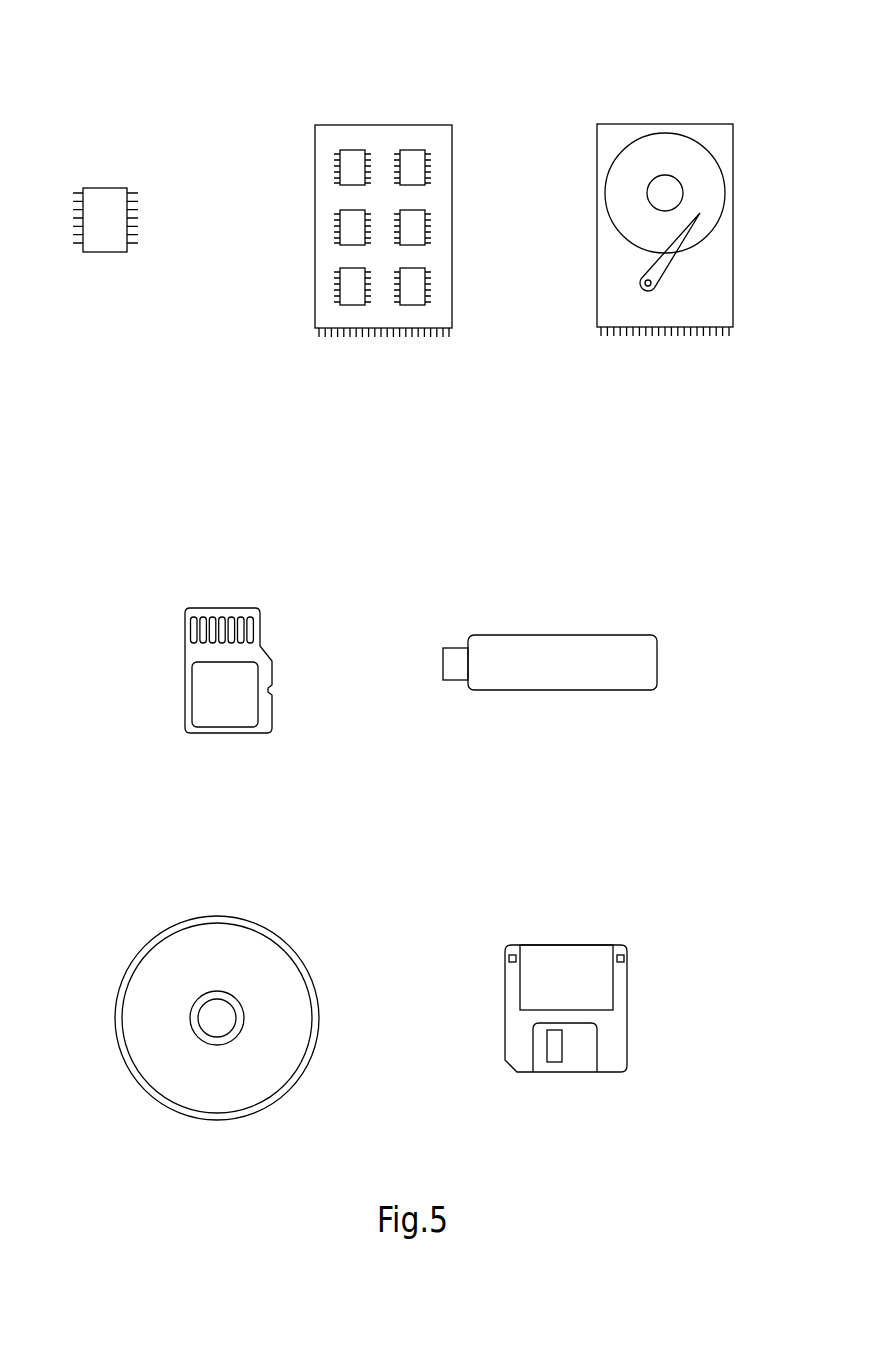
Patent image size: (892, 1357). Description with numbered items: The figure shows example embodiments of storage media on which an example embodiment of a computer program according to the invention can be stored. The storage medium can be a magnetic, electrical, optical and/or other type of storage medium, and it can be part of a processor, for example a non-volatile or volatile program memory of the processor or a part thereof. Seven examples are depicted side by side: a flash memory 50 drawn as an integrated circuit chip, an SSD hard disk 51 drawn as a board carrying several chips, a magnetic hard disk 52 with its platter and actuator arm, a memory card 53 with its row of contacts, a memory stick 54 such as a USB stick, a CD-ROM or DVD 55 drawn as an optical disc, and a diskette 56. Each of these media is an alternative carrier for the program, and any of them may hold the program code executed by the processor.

The flash memory 50 is at (131, 148).
The SSD hard disk 51 is at (454, 87).
The magnetic hard disk 52 is at (736, 87).
The memory card 53 is at (264, 577).
The memory stick 54 is at (631, 596).
The CD-ROM or DVD 55 is at (301, 911).
The diskette 56 is at (624, 907).